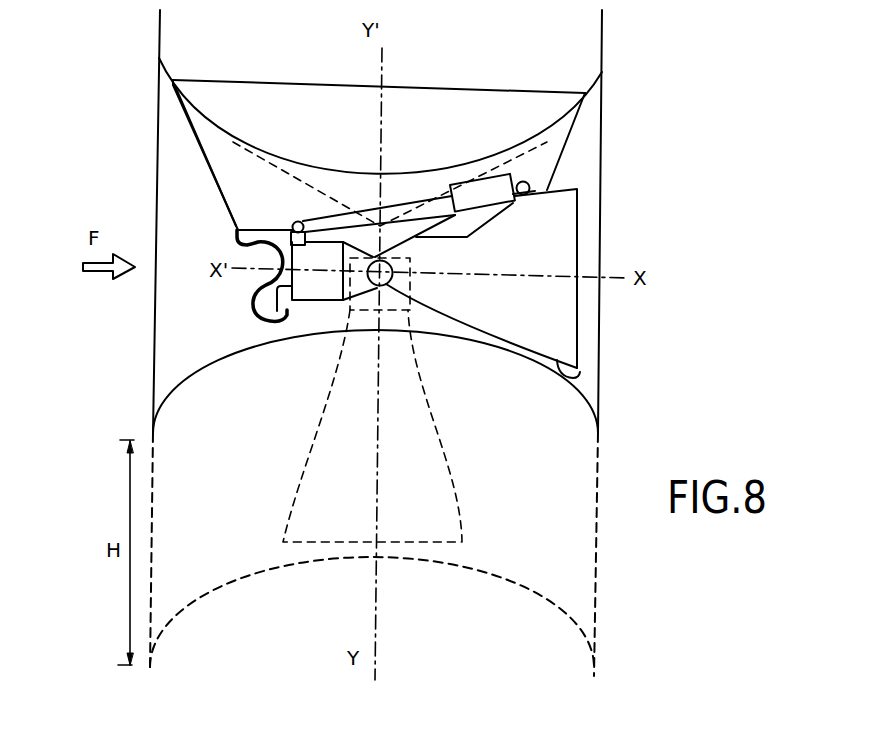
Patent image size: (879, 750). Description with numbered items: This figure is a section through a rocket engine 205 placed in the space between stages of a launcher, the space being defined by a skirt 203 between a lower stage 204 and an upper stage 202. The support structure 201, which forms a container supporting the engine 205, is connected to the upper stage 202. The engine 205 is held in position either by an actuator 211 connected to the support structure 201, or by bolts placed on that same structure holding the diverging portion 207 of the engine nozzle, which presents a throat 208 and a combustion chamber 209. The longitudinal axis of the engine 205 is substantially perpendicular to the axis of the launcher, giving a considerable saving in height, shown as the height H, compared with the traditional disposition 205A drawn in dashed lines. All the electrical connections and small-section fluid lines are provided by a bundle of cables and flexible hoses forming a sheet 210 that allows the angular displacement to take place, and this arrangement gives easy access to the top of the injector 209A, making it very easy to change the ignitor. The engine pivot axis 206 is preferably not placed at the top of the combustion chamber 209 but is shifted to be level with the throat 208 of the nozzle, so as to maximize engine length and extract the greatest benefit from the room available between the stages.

The support structure 201 is at (212, 191).
The upper stage 202 is at (601, 81).
The skirt 203 is at (156, 372).
The lower stage 204 is at (207, 371).
The rocket engine 205 is at (562, 243).
The traditional disposition 205A is at (440, 502).
The engine pivot axis 206 is at (382, 259).
The diverging portion of the engine nozzle 207 is at (585, 377).
The throat of the nozzle 208 is at (416, 318).
The combustion chamber 209 is at (323, 293).
The injector 209A is at (279, 322).
The sheet of cables and flexible hoses 210 is at (253, 292).
The actuator 211 is at (370, 218).